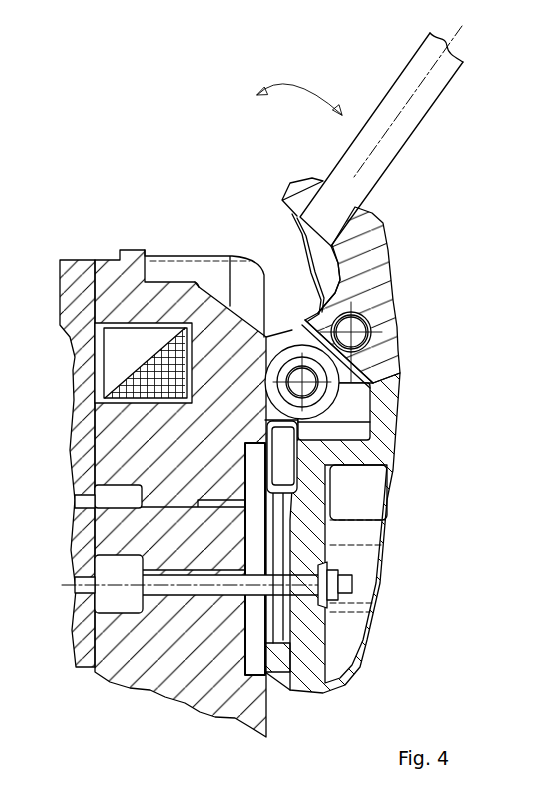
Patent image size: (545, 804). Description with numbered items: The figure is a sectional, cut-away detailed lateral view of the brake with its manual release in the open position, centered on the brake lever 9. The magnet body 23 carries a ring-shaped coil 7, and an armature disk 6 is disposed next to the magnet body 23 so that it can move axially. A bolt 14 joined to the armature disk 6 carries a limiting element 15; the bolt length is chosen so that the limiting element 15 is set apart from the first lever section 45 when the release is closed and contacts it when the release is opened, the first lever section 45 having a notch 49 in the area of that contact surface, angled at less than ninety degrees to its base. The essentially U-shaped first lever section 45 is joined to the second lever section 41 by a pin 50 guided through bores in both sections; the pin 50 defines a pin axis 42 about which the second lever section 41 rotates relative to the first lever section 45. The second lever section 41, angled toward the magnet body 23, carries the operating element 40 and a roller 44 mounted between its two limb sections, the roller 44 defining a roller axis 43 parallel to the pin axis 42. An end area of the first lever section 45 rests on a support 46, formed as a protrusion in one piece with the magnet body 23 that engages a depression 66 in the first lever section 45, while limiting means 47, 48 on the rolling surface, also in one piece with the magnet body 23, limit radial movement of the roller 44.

The armature disk 6 is at (78, 298).
The coil 7 is at (132, 350).
The magnet body 23 is at (220, 330).
The limiting means 48 is at (275, 353).
The operating element 40 is at (405, 92).
The second lever section 41 is at (363, 247).
The pin 50 is at (356, 323).
The pin axis 42 is at (325, 370).
The roller 44 is at (302, 382).
The roller axis 43 is at (370, 383).
The brake lever 9 is at (426, 425).
The first lever section 45 is at (372, 450).
The limiting means 47 is at (285, 467).
The notch 49 is at (328, 558).
The limiting element 15 is at (335, 593).
The depression 66 is at (280, 645).
The support 46 is at (274, 659).
The bolt 14 is at (258, 580).